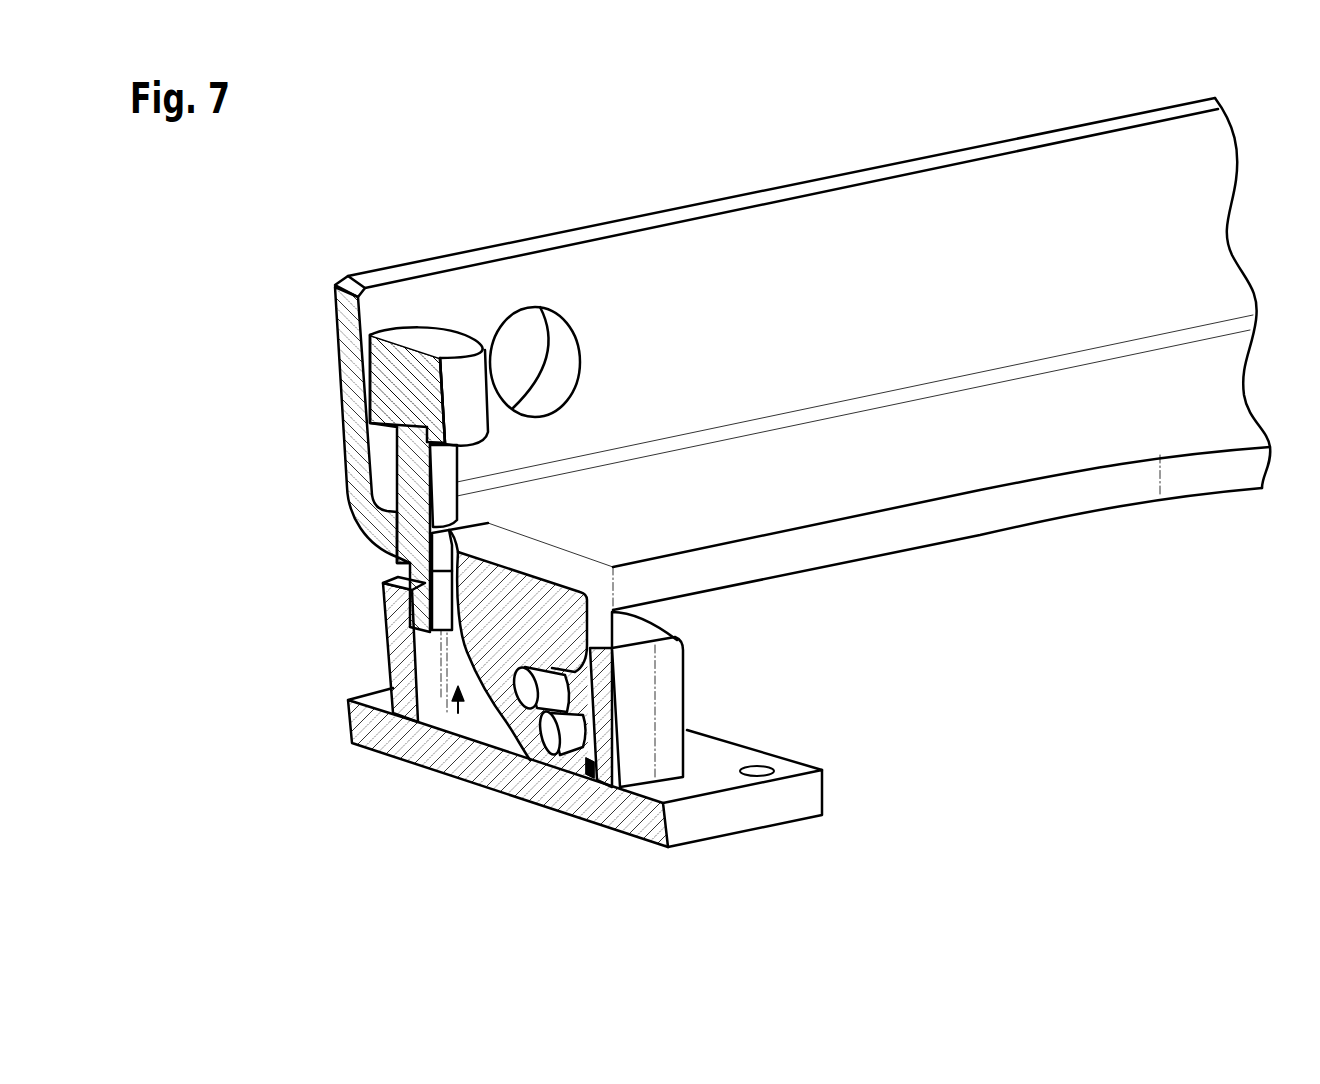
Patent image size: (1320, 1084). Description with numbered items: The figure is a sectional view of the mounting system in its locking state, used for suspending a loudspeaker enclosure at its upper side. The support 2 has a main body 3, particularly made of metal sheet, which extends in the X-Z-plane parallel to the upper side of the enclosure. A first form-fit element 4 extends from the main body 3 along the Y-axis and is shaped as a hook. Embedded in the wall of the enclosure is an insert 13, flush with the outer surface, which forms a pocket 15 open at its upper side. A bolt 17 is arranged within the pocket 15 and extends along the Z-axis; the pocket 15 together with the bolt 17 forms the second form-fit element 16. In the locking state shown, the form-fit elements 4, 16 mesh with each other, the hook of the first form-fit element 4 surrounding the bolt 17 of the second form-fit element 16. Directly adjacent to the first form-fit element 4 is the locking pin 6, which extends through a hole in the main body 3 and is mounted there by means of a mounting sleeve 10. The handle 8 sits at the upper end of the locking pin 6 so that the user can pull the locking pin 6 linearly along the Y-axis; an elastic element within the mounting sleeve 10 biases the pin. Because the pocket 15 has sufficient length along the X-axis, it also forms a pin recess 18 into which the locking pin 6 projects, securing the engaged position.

The support 2 is at (932, 192).
The main body 3 is at (1062, 452).
The first form-fit element 4 is at (490, 690).
The locking pin 6 is at (420, 605).
The handle 8 is at (392, 382).
The mounting sleeve 10 is at (410, 474).
The insert 13 is at (802, 812).
The pocket 15 is at (595, 768).
The second form-fit element 16 is at (595, 768).
The bolt 17 is at (528, 688).
The pin recess 18 is at (456, 721).